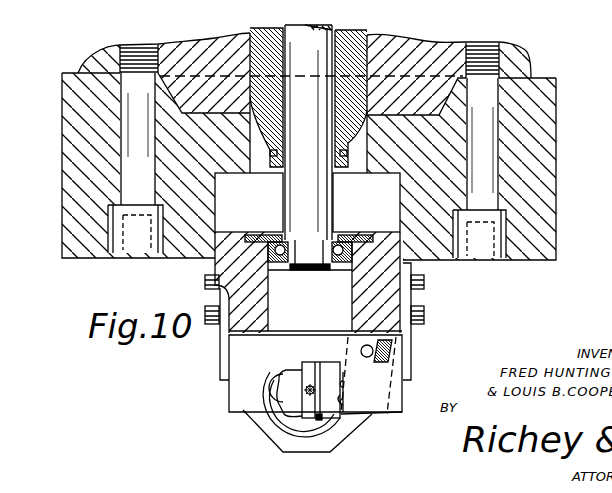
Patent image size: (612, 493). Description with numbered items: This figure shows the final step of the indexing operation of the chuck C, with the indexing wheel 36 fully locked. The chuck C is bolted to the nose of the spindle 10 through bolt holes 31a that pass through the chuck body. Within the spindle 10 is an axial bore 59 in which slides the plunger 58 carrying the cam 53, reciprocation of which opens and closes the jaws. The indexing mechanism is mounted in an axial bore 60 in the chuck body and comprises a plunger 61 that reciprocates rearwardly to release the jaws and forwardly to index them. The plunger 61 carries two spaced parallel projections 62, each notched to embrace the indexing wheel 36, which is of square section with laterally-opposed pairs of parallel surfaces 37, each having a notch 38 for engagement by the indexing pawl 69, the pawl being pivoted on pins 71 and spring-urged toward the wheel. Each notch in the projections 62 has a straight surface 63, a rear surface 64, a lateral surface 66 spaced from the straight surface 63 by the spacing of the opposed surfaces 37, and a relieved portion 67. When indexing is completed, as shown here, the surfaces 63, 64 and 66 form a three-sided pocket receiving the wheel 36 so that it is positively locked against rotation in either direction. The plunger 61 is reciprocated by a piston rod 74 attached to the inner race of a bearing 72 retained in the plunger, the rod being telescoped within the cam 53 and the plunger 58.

The spindle 10 is at (222, 20).
The chuck C is at (62, 163).
The plunger 58 is at (355, 31).
The cam 53 is at (352, 148).
The bolt holes 31a is at (489, 142).
The axial bore 60 is at (228, 200).
The axial bore 59 is at (352, 174).
The piston rod 74 is at (300, 219).
The bearing 72 is at (300, 268).
The plunger 61 is at (213, 303).
The projections 62 is at (229, 391).
The lateral surface 66 is at (282, 365).
The rear surface 64 is at (307, 363).
The relieved portion 67 is at (270, 398).
The pins 71 is at (367, 357).
The parallel surfaces 37 is at (344, 371).
The straight surface 63 is at (342, 403).
The notch 38 is at (294, 418).
The indexing wheel 36 is at (324, 420).
The indexing pawl 69 is at (377, 414).